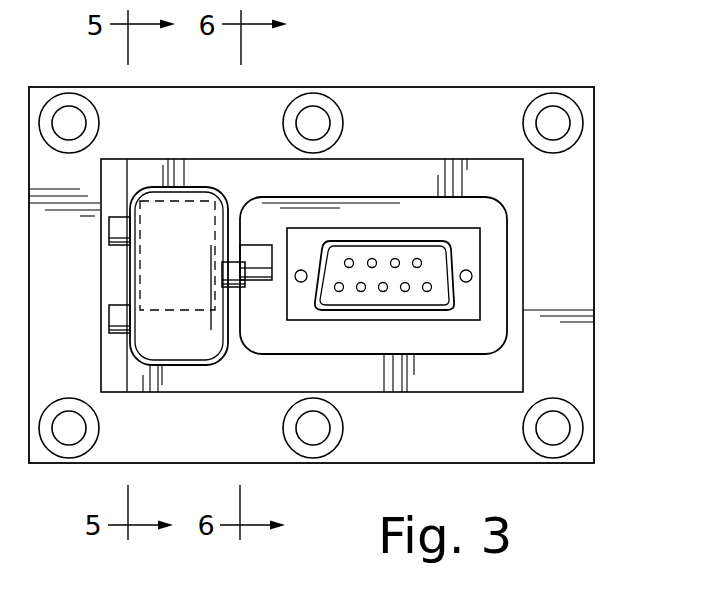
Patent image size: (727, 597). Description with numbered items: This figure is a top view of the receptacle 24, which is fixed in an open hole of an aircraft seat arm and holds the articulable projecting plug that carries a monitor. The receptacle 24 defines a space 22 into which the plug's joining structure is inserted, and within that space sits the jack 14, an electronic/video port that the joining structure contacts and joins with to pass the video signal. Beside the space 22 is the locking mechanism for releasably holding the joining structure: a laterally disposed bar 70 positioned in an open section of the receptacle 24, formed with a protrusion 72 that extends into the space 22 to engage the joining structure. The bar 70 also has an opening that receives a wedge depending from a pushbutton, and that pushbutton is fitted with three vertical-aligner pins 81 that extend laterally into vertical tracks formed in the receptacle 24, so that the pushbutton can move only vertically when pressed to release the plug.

The jack 14 is at (452, 252).
The space 22 is at (492, 333).
The receptacle 24 is at (612, 205).
The bar 70 is at (184, 200).
The protrusion 72 is at (257, 245).
The vertical-aligner pins 81 is at (108, 230).